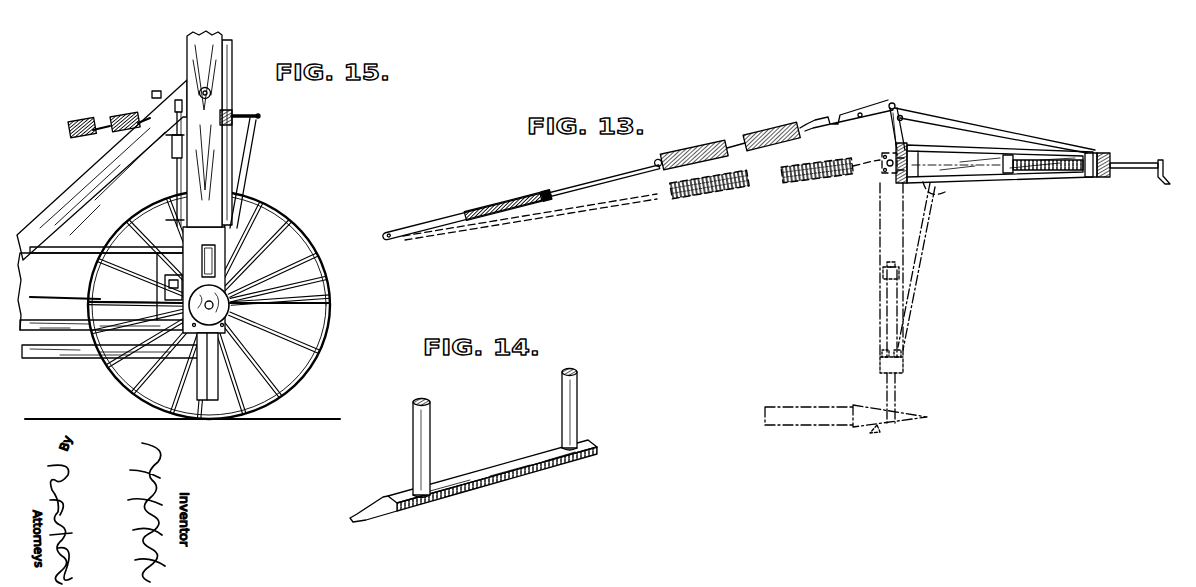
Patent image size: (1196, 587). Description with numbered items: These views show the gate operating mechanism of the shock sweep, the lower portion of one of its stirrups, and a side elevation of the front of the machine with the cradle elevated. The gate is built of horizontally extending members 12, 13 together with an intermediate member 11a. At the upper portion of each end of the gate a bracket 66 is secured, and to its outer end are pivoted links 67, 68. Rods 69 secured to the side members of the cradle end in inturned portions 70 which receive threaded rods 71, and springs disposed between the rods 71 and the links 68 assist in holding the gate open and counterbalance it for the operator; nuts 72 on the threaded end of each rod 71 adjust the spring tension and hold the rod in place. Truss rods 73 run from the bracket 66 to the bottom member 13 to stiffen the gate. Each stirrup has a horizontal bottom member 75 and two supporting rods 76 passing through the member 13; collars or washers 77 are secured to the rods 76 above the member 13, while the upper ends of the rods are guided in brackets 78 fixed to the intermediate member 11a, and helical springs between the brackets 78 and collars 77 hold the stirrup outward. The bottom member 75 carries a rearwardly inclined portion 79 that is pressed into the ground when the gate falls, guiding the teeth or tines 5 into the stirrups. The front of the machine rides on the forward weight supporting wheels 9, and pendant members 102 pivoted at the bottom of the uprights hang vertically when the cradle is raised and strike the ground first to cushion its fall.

In FIG. 15, the teeth or tines 5 is at (50, 352).
In FIG. 15, the forward weight supporting wheel 9 is at (281, 210).
In FIG. 13, the intermediate member of the gate 11a is at (960, 157).
In FIG. 13, the horizontal member of the gate 12 is at (901, 148).
In FIG. 13, the bottom member of the gate 13 is at (1103, 153).
In FIG. 15, the bracket 66 is at (247, 112).
In FIG. 13, the bracket 66 is at (888, 125).
In FIG. 13, the link 67 is at (874, 108).
In FIG. 13, the link 68 is at (842, 112).
In FIG. 13, the rod 69 is at (432, 221).
In FIG. 13, the inturned portion 70 is at (552, 194).
In FIG. 13, the threaded rod 71 is at (611, 185).
In FIG. 13, the nut 72 is at (538, 197).
In FIG. 15, the truss rod 73 is at (247, 149).
In FIG. 13, the truss rod 73 is at (1005, 141).
In FIG. 13, the bottom member of the stirrup 75 is at (1162, 154).
In FIG. 14, the bottom member of the stirrup 75 is at (513, 467).
In FIG. 13, the supporting rod 76 is at (1127, 165).
In FIG. 14, the supporting rod 76 is at (430, 423).
In FIG. 13, the collar or washer 77 is at (1090, 152).
In FIG. 13, the bracket 78 is at (1010, 173).
In FIG. 14, the inclined portion 79 is at (362, 511).
In FIG. 15, the pendant member 102 is at (212, 389).